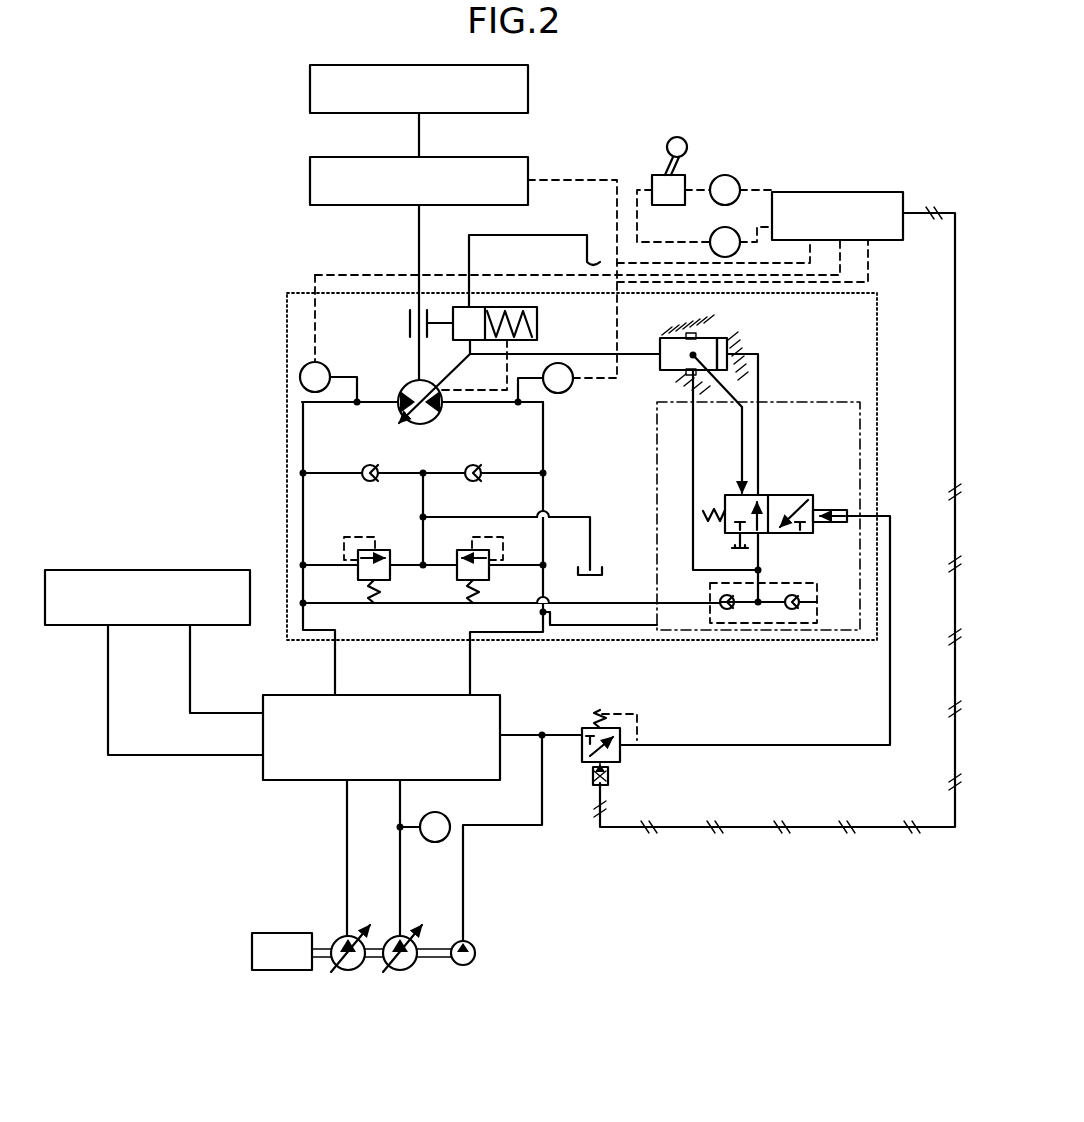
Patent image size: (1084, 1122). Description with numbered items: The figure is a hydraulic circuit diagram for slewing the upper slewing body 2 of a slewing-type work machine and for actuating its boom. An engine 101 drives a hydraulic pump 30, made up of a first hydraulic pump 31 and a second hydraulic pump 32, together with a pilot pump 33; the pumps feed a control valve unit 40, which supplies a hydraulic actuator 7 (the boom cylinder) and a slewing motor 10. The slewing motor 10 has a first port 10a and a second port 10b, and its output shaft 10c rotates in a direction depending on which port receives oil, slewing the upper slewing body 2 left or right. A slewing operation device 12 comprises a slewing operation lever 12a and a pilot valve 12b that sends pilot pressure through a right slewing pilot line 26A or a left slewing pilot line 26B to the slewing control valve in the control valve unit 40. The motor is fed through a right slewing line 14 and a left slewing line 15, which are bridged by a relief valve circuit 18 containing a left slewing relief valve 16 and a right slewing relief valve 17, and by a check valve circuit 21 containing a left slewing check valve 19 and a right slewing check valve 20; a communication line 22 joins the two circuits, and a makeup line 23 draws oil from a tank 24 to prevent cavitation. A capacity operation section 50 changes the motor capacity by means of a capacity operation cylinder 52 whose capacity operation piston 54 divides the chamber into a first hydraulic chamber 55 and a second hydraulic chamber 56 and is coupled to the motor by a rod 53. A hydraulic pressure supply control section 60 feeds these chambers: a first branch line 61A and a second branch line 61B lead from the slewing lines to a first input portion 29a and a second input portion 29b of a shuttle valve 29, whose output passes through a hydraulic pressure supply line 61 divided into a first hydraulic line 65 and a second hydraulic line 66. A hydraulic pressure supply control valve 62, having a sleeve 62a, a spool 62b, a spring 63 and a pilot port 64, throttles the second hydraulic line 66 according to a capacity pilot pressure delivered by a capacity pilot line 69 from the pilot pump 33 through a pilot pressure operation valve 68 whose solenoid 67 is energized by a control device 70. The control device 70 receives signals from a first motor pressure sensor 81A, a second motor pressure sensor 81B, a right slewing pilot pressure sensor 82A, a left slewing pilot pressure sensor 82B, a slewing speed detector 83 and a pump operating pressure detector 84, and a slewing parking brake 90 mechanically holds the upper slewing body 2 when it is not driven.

The upper slewing body 2 is at (310, 86).
The hydraulic actuator 7 is at (101, 570).
The slewing motor 10 is at (363, 331).
The first port 10a is at (398, 412).
The second port 10b is at (442, 413).
The output shaft 10c is at (419, 352).
The slewing operation device 12 is at (651, 132).
The slewing operation lever 12a is at (676, 137).
The pilot valve 12b is at (657, 175).
The right slewing line 14 is at (470, 548).
The left slewing line 15 is at (544, 502).
The left slewing relief valve 16 is at (362, 583).
The right slewing relief valve 17 is at (488, 583).
The relief valve circuit 18 is at (412, 562).
The left slewing check valve 19 is at (360, 465).
The right slewing check valve 20 is at (481, 468).
The check valve circuit 21 is at (398, 480).
The communication line 22 is at (423, 497).
The makeup line 23 is at (593, 520).
The tank 24 is at (603, 568).
The right slewing pilot line 26A is at (698, 188).
The left slewing pilot line 26B is at (637, 213).
The shuttle valve 29 is at (824, 639).
The first input portion 29a is at (722, 608).
The second input portion 29b is at (800, 610).
The hydraulic pump 30 is at (374, 999).
The first hydraulic pump 31 is at (350, 972).
The second hydraulic pump 32 is at (402, 978).
The pilot pump 33 is at (474, 960).
The control valve unit 40 is at (283, 782).
The capacity operation section 50 is at (790, 322).
The capacity operation cylinder 52 is at (690, 349).
The rod 53 is at (660, 348).
The capacity operation piston 54 is at (728, 342).
The first hydraulic chamber 55 is at (670, 330).
The second hydraulic chamber 56 is at (738, 365).
The hydraulic pressure supply control section 60 is at (799, 516).
The hydraulic pressure supply line 61 is at (758, 572).
The first branch line 61A is at (593, 603).
The second branch line 61B is at (653, 630).
The hydraulic pressure supply control valve 62 is at (833, 475).
The sleeve 62a is at (768, 495).
The spool 62b is at (828, 498).
The spring 63 is at (704, 505).
The pilot port 64 is at (830, 524).
The first hydraulic line 65 is at (690, 457).
The second hydraulic line 66 is at (760, 388).
The solenoid 67 is at (591, 788).
The pilot pressure operation valve 68 is at (602, 710).
The capacity pilot line 69 is at (762, 743).
The control device 70 is at (878, 192).
The first motor pressure sensor 81A is at (300, 375).
The second motor pressure sensor 81B is at (563, 388).
The right slewing pilot pressure sensor 82A is at (735, 178).
The left slewing pilot pressure sensor 82B is at (732, 228).
The slewing speed detector 83 is at (310, 180).
The pump operating pressure detector 84 is at (432, 843).
The slewing parking brake 90 is at (498, 305).
The engine 101 is at (252, 957).